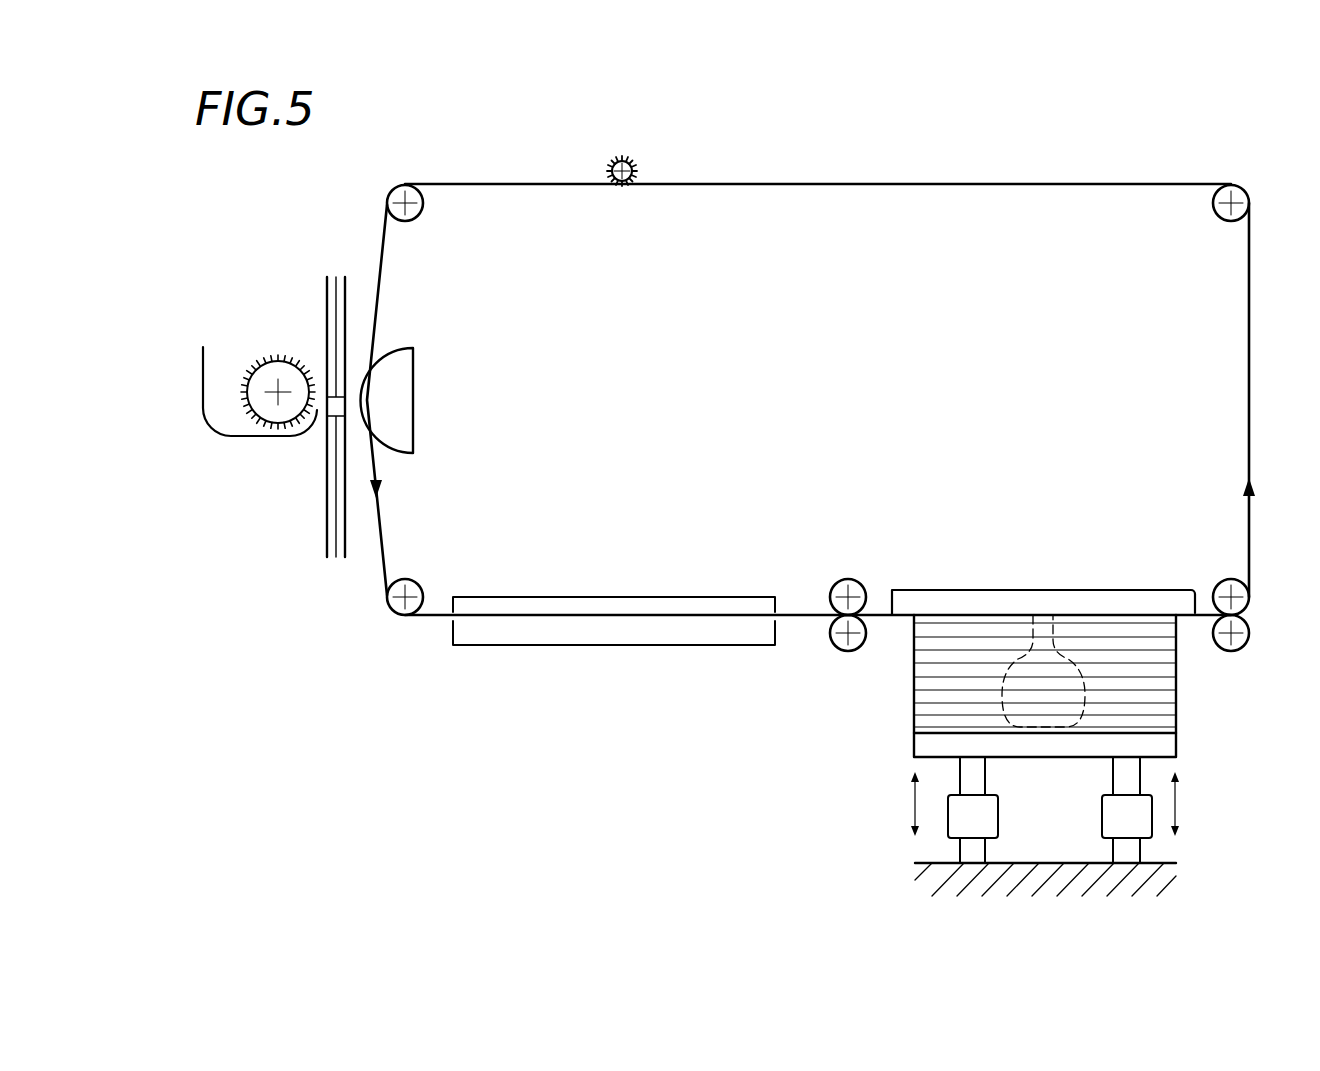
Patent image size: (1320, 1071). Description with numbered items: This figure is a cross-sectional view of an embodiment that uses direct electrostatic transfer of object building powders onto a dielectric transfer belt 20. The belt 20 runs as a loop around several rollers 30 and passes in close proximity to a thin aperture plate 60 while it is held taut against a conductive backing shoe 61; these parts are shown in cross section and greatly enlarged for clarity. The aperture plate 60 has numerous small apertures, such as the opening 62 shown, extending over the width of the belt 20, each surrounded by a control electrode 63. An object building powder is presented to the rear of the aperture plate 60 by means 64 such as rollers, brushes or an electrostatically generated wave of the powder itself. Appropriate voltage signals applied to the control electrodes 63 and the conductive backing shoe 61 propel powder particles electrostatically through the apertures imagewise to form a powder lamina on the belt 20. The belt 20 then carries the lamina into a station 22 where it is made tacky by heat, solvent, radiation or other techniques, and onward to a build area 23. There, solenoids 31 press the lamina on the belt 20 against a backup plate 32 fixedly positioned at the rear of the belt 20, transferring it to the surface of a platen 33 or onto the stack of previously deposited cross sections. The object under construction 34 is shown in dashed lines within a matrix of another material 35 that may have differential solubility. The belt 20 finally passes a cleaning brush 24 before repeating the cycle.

The transfer belt 20 is at (1048, 184).
The station 22 is at (614, 597).
The build area 23 is at (975, 533).
The cleaning brush 24 is at (628, 152).
The rollers 30 is at (423, 205).
The solenoids 31 is at (988, 829).
The backup plate 32 is at (1073, 590).
The platen 33 is at (912, 748).
The object under construction 34 is at (1073, 668).
The matrix of another material 35 is at (930, 650).
The aperture plate 60 is at (325, 511).
The conductive backing shoe 61 is at (414, 390).
The feed slot 62 is at (345, 408).
The control electrode 63 is at (346, 283).
The powder presentation means 64 is at (268, 342).